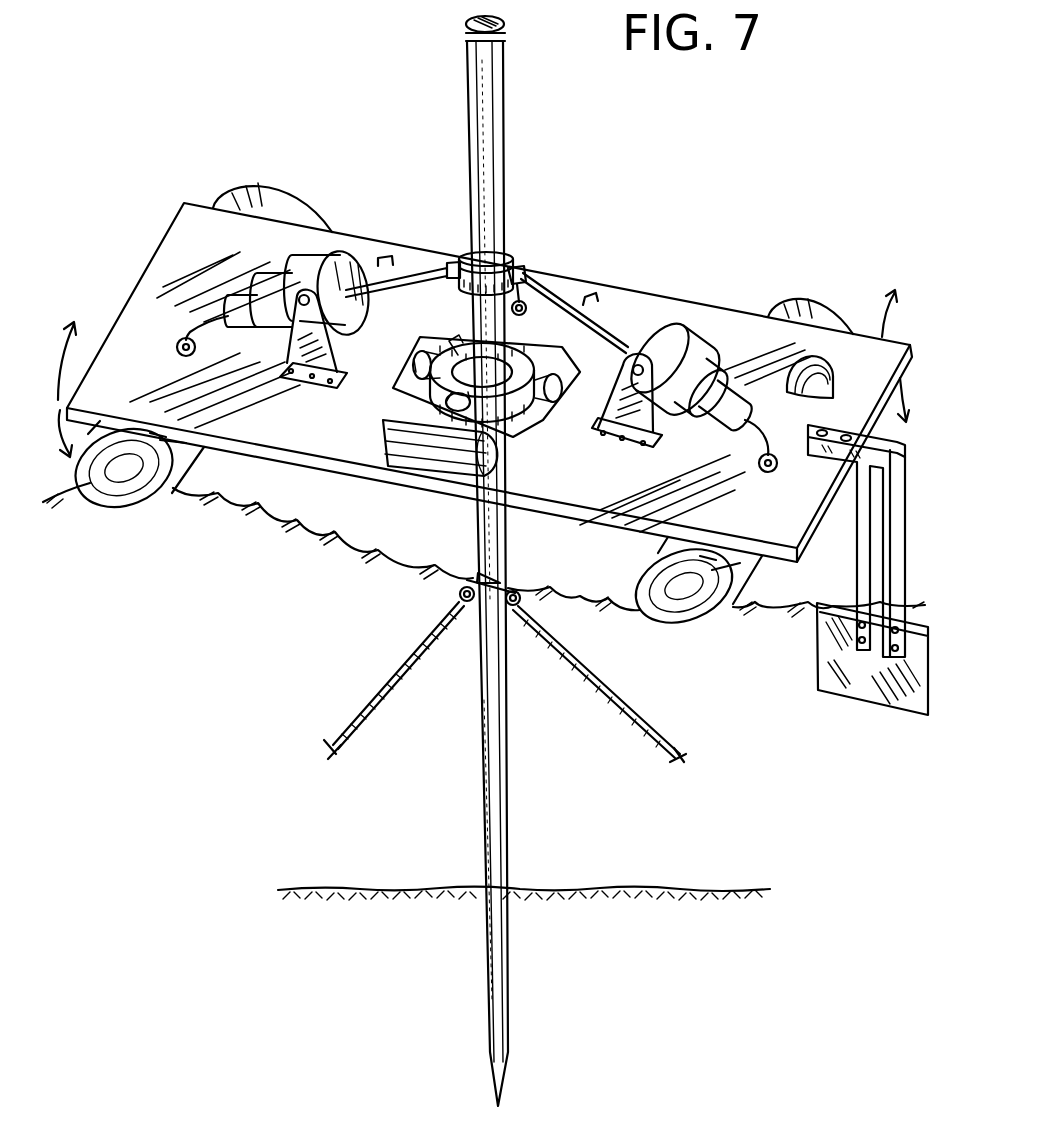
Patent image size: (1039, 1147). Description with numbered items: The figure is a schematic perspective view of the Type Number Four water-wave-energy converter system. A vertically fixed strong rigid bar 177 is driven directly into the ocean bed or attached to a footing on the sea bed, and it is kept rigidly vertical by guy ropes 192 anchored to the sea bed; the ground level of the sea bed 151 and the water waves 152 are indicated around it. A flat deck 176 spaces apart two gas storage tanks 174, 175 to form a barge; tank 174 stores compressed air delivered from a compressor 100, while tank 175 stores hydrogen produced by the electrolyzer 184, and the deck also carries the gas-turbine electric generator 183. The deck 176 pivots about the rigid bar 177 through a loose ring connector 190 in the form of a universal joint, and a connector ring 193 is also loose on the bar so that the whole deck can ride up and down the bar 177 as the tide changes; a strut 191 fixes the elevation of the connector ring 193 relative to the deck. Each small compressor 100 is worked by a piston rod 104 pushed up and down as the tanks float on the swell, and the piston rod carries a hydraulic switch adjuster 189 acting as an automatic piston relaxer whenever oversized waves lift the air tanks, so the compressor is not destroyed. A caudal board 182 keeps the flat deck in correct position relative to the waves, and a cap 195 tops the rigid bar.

The compressor 100 is at (309, 253).
The piston rod 104 is at (436, 255).
The ground surface 151 is at (592, 893).
The water waves 152 is at (206, 497).
The gas storage tank 174 is at (258, 202).
The gas storage tank 175 is at (813, 307).
The flat deck 176 is at (586, 490).
The vertically fixed strong rigid bar 177 is at (500, 115).
The caudal board 182 is at (832, 662).
The gas-turbine electric generator 183 is at (494, 449).
The electrolyzer 184 is at (823, 374).
The hydraulic switch adjuster 189 is at (388, 256).
The loose ring connector 190 is at (398, 404).
The strut 191 is at (526, 277).
The guy ropes 192 is at (603, 694).
The connector ring 193 is at (505, 263).
The pole cap 195 is at (466, 34).